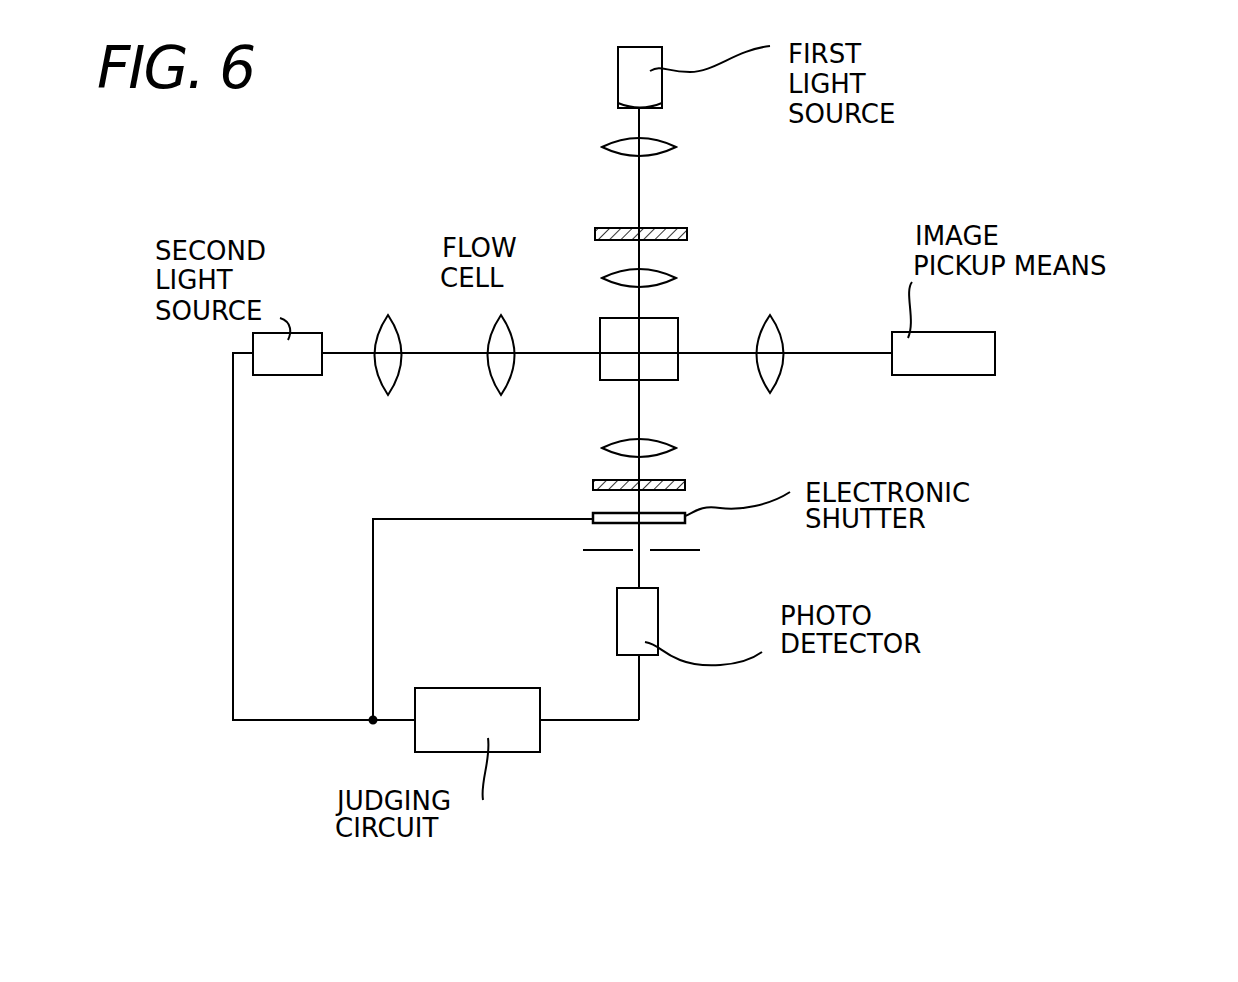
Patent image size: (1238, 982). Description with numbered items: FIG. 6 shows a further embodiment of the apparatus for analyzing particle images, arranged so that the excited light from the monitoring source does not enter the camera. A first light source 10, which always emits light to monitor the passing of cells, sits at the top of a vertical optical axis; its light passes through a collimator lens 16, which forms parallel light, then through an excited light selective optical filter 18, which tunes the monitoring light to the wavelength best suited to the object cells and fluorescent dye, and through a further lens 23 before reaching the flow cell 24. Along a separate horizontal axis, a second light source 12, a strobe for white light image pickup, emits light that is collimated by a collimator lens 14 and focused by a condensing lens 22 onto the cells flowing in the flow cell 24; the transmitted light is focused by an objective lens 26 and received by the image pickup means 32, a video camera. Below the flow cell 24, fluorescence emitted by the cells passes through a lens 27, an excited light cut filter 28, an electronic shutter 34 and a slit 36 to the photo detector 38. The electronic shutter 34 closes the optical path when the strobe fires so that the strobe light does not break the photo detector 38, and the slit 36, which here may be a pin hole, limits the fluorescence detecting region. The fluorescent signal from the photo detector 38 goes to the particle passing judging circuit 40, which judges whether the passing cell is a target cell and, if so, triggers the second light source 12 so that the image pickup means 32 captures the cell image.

The first light source 10 is at (662, 87).
The second light source 12 is at (293, 375).
The collimator lens 14 is at (388, 395).
The collimator lens 16 is at (676, 147).
The excited light selective optical filter 18 is at (687, 228).
The condensing lens 22 is at (498, 395).
The lens 23 is at (676, 278).
The flow cell 24 is at (660, 380).
The objective lens 26 is at (778, 370).
The lens 27 is at (676, 448).
The excited light cut filter 28 is at (685, 490).
The image pickup means 32 is at (935, 332).
The electronic shutter 34 is at (685, 523).
The slit 36 is at (675, 550).
The photo detector 38 is at (658, 620).
The particle passing judging circuit 40 is at (540, 733).